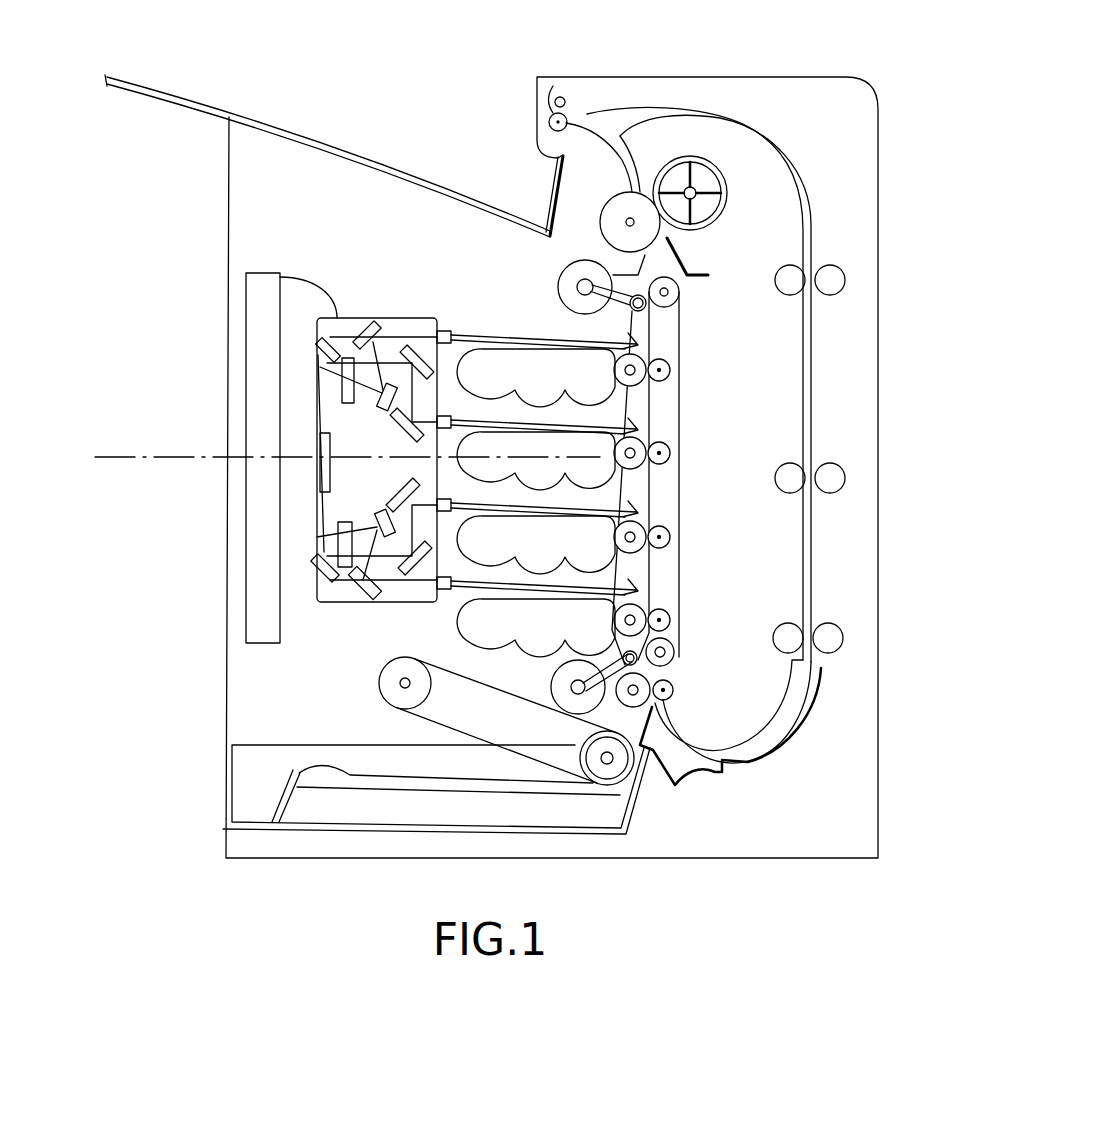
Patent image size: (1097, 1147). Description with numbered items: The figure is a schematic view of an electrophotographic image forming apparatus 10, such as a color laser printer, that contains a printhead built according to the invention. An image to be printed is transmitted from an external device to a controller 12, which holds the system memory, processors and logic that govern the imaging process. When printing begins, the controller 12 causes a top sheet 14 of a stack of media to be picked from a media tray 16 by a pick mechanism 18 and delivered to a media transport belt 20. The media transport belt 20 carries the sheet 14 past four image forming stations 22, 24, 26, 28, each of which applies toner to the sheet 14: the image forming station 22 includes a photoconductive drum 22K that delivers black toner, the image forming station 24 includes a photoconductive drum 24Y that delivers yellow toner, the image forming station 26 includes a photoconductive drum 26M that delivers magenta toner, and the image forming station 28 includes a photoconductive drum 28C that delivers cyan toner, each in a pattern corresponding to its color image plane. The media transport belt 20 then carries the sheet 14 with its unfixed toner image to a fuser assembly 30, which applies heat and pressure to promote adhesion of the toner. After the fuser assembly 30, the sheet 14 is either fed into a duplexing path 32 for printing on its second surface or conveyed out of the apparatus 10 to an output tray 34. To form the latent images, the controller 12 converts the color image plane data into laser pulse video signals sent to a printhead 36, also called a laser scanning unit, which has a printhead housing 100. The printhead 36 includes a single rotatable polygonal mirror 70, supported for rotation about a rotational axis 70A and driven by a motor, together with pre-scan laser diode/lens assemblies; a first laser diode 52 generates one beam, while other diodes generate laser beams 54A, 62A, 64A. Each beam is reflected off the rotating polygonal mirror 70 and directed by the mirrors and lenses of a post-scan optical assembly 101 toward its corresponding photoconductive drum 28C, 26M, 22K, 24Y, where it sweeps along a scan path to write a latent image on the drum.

The electrophotographic image forming apparatus 10 is at (655, 77).
The controller 12 is at (247, 382).
The top sheet 14 is at (318, 766).
The media tray 16 is at (225, 788).
The pick mechanism 18 is at (439, 728).
The media transport belt 20 is at (692, 706).
The image forming station 22 is at (522, 636).
The image forming station 24 is at (522, 553).
The image forming station 26 is at (522, 469).
The image forming station 28 is at (522, 386).
The photoconductive drum 22K is at (657, 603).
The photoconductive drum 24Y is at (657, 520).
The photoconductive drum 26M is at (657, 437).
The photoconductive drum 28C is at (657, 354).
The fuser assembly 30 is at (692, 249).
The duplexing path 32 is at (819, 386).
The output tray 34 is at (386, 152).
The printhead 36 is at (389, 441).
The first laser diode 52 is at (507, 336).
The laser beam 54A is at (437, 450).
The laser beam 62A is at (465, 583).
The laser beam 64A is at (467, 505).
The rotatable polygonal mirror 70 is at (318, 452).
The rotational axis 70A is at (122, 455).
The printhead housing 100 is at (314, 586).
The post-scan optical assembly 101 is at (318, 343).